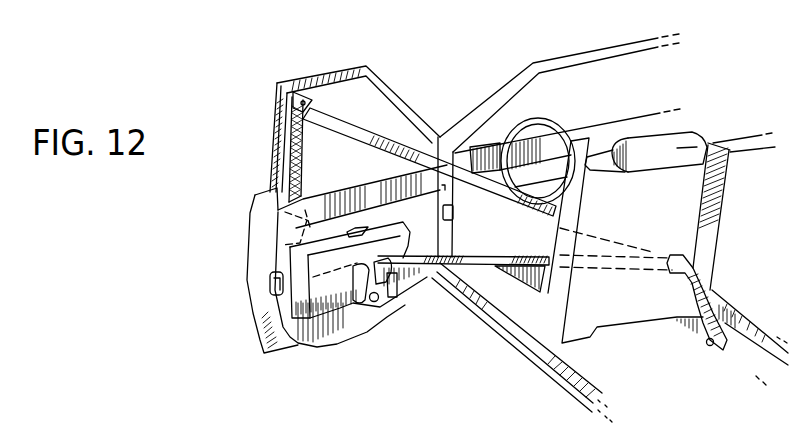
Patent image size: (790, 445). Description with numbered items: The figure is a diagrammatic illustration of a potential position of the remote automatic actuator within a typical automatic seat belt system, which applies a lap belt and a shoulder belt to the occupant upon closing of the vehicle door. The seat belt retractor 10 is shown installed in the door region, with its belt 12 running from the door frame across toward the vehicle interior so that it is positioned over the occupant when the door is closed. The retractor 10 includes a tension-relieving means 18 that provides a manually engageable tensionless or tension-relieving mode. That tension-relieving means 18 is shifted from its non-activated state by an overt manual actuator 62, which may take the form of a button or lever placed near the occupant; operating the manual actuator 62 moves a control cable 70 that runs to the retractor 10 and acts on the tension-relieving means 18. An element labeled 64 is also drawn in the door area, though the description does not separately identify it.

The seat belt retractor 10 is at (278, 230).
The belt 12 is at (378, 137).
The tension-relieving means 18 is at (283, 246).
The manual actuator 62 is at (388, 235).
The actuating rod 64 is at (456, 224).
The control cable 70 is at (330, 343).